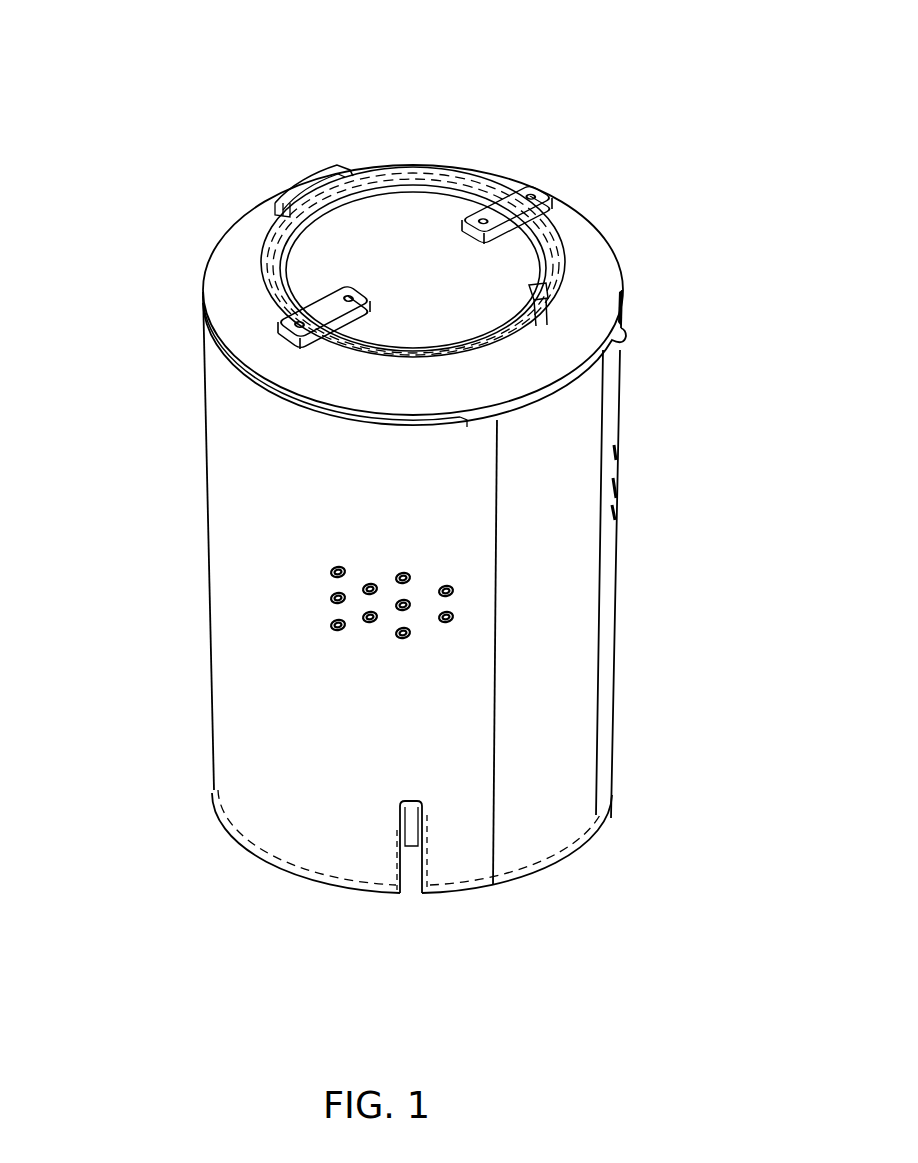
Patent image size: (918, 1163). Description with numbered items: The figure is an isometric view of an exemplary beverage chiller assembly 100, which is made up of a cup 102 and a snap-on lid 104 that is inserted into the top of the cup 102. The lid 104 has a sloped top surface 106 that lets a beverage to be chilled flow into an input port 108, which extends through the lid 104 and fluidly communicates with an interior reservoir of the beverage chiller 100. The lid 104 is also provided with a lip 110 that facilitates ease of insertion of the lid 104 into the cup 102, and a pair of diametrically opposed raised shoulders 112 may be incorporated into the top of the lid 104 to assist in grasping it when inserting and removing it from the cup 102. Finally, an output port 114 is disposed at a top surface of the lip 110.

The beverage chiller assembly 100 is at (460, 100).
The cup 102 is at (240, 528).
The snap-on lid 104 is at (595, 228).
The sloped top surface 106 is at (363, 208).
The input port 108 is at (548, 288).
The lip 110 is at (628, 340).
The latch tab 112 is at (503, 200).
The output port 114 is at (287, 210).